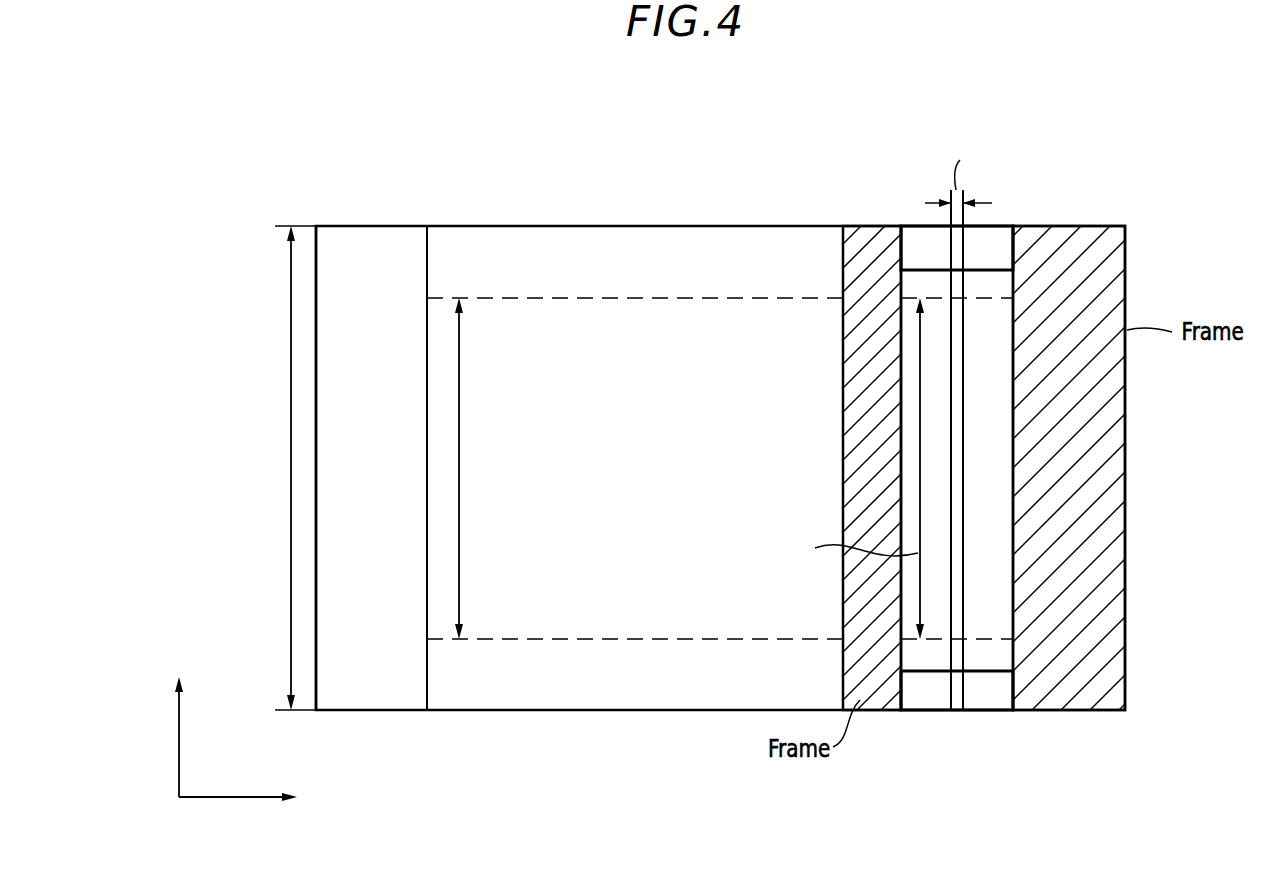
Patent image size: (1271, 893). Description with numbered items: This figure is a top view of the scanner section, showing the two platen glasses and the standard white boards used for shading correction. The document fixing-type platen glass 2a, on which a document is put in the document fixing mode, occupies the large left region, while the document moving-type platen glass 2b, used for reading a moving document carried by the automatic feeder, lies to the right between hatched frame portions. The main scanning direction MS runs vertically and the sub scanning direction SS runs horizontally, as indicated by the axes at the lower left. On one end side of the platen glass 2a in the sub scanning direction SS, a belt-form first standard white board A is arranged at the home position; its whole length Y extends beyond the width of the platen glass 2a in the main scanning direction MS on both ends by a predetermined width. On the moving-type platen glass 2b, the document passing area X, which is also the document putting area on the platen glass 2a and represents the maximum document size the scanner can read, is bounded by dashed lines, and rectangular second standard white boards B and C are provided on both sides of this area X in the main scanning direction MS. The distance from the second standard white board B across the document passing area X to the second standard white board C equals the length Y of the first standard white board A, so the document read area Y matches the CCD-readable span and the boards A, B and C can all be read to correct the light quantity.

The document fixing-type platen glass 2a is at (623, 226).
The document moving-type platen glass 2b is at (995, 627).
The first standard white board A is at (368, 226).
The second standard white board B is at (980, 697).
The second standard white board C is at (918, 226).
The document putting (passing) area X is at (514, 468).
The length of first standard white board (document readout area) Y is at (291, 468).
The main scanning direction MS is at (211, 729).
The sub scanning direction SS is at (252, 830).